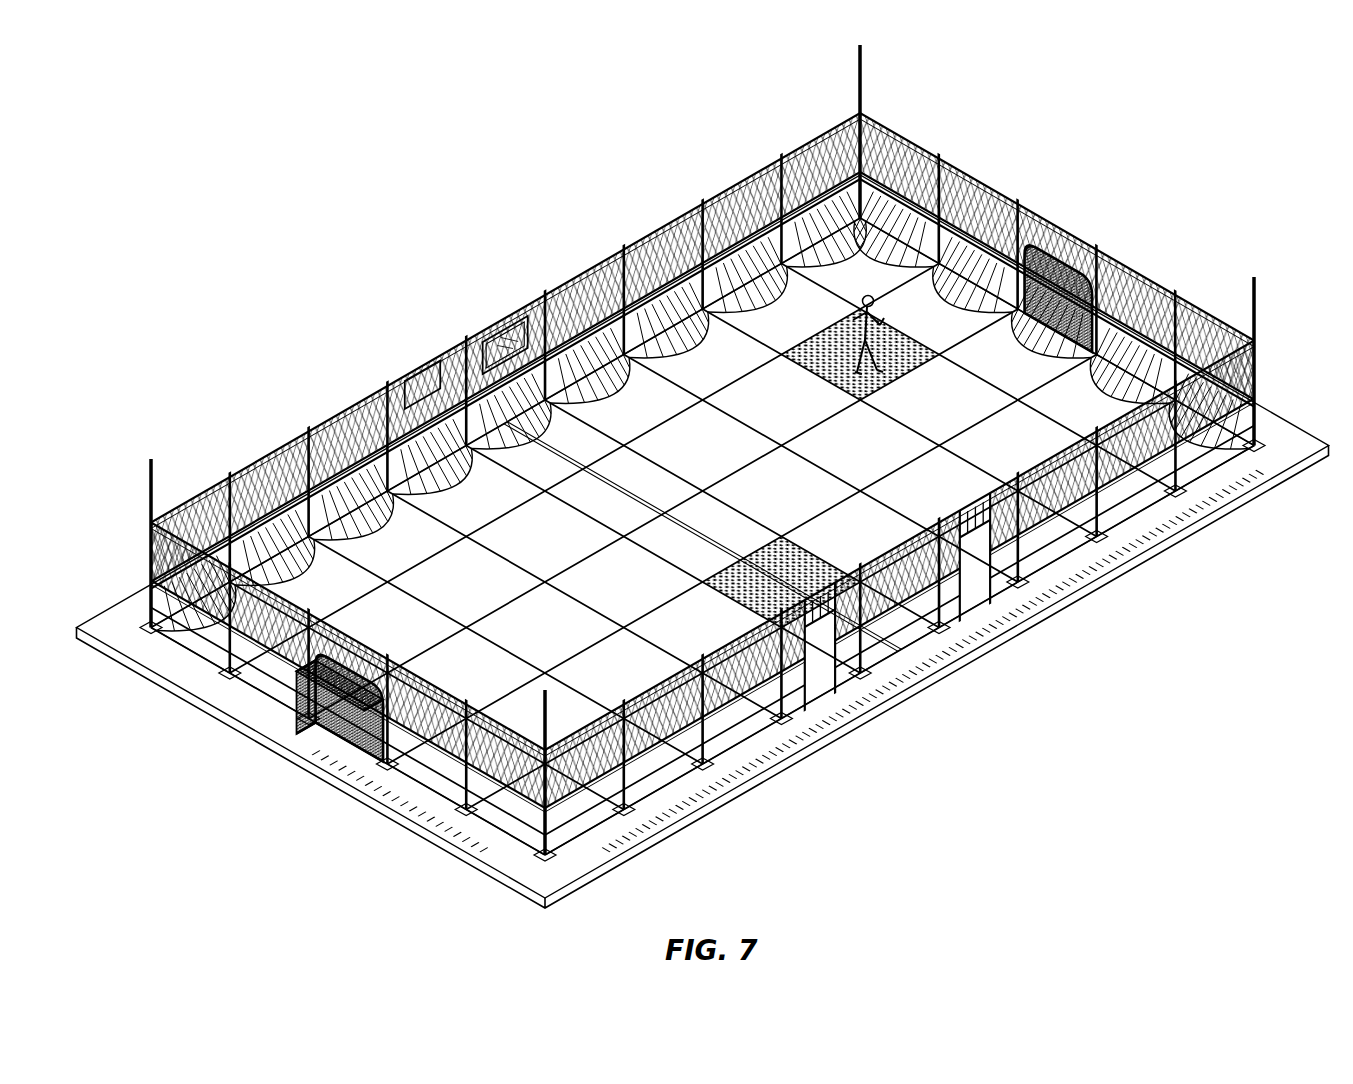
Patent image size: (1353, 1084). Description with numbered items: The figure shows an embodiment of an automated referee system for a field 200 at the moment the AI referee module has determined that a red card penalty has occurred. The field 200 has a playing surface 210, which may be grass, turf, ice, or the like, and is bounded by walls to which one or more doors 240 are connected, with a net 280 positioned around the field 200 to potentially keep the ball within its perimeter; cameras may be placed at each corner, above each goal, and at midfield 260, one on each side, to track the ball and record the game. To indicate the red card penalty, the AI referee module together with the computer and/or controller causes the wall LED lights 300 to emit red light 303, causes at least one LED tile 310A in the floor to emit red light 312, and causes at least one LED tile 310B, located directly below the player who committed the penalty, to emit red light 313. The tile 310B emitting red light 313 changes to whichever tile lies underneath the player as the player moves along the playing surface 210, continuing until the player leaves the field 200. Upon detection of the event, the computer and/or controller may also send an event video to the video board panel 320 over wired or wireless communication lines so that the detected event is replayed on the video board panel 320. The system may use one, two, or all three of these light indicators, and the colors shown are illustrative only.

The field 200 is at (292, 130).
The playing surface 210 is at (702, 536).
The door 240 is at (897, 602).
The midfield 260 is at (506, 592).
The net 280 is at (702, 461).
The wall LED lights 300 is at (702, 411).
The red light 303 is at (250, 558).
The LED tile 310A is at (764, 541).
The LED tile 310B is at (829, 386).
The red light 312 is at (736, 584).
The red light 313 is at (888, 374).
The video board panel 320 is at (505, 345).